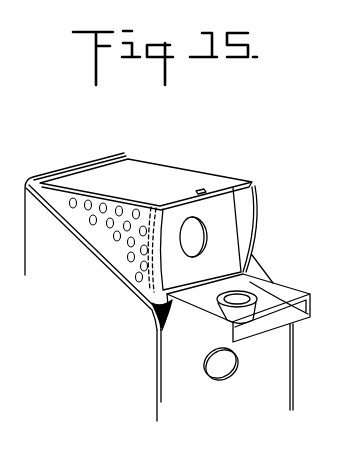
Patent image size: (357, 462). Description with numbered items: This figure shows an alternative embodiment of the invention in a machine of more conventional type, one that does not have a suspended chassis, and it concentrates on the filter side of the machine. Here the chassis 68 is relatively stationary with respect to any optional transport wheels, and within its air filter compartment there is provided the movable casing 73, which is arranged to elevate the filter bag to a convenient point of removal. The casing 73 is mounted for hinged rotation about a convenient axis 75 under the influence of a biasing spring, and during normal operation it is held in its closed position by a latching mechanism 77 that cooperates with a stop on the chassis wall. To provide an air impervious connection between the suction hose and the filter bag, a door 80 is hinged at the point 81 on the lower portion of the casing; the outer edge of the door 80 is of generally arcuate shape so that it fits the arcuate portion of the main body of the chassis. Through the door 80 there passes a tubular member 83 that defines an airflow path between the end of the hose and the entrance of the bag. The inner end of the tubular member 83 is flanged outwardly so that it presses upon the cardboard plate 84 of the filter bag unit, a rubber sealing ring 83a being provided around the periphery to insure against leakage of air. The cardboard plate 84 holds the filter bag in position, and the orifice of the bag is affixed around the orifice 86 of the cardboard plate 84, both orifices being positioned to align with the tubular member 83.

The chassis 68 is at (172, 361).
The movable casing 73 is at (170, 177).
The axis 75 is at (110, 161).
The latching mechanism 77 is at (212, 188).
The door 80 is at (272, 332).
The hinge point 81 is at (163, 289).
The tubular member 83 is at (243, 314).
The rubber sealing ring 83a is at (265, 285).
The cardboard plate 84 is at (217, 205).
The orifice 86 is at (185, 242).